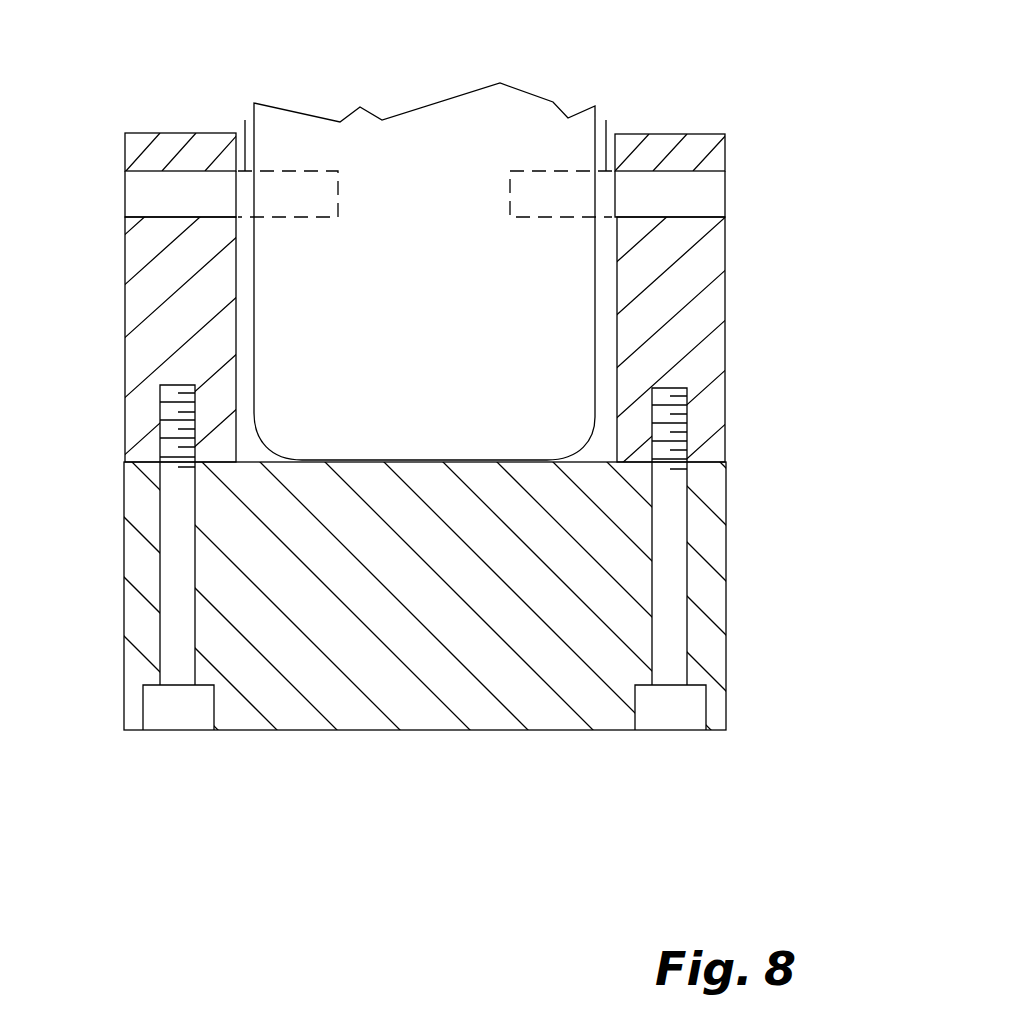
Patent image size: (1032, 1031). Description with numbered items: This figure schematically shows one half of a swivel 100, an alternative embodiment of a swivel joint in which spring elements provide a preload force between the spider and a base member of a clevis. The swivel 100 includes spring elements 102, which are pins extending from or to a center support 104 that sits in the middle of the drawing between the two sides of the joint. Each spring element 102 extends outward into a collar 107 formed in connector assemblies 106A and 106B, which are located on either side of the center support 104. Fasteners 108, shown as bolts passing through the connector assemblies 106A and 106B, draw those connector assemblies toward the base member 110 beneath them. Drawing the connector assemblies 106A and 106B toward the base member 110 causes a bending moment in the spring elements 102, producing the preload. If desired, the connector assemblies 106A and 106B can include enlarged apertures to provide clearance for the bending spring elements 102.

The swivel 100 is at (818, 192).
The spring elements 102 is at (245, 171).
The center support 104 is at (422, 140).
The connector assembly 106A is at (180, 133).
The connector assembly 106B is at (665, 133).
The collars 107 is at (137, 307).
The fasteners 108 is at (160, 570).
The base member 110 is at (318, 730).